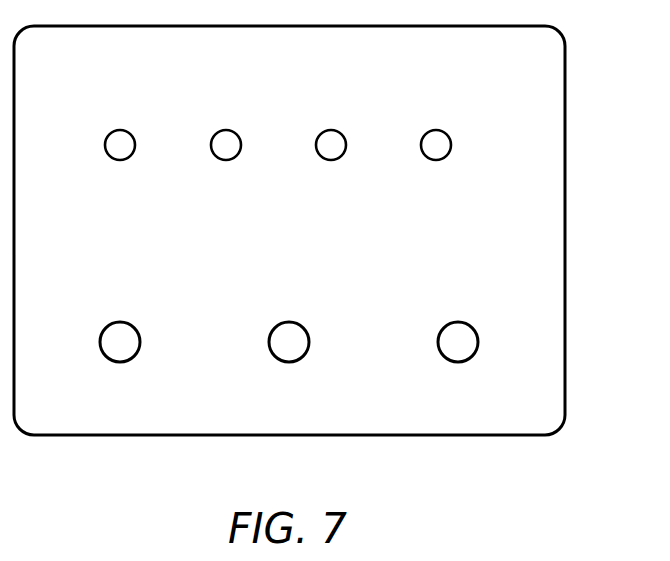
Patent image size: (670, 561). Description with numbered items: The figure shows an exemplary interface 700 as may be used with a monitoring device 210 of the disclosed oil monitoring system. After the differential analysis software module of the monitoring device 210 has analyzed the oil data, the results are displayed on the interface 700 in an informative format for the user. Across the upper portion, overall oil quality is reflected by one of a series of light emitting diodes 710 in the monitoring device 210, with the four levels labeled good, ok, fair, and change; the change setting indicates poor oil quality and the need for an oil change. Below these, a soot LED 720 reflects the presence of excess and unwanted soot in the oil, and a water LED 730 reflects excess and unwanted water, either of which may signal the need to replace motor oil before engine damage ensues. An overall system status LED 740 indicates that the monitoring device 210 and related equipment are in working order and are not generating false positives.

The interface 700 is at (542, 112).
The light emitting diodes 710 is at (461, 125).
The soot LED 720 is at (100, 335).
The water LED 730 is at (269, 335).
The system status LED 740 is at (462, 349).
The monitoring device 210 is at (479, 416).